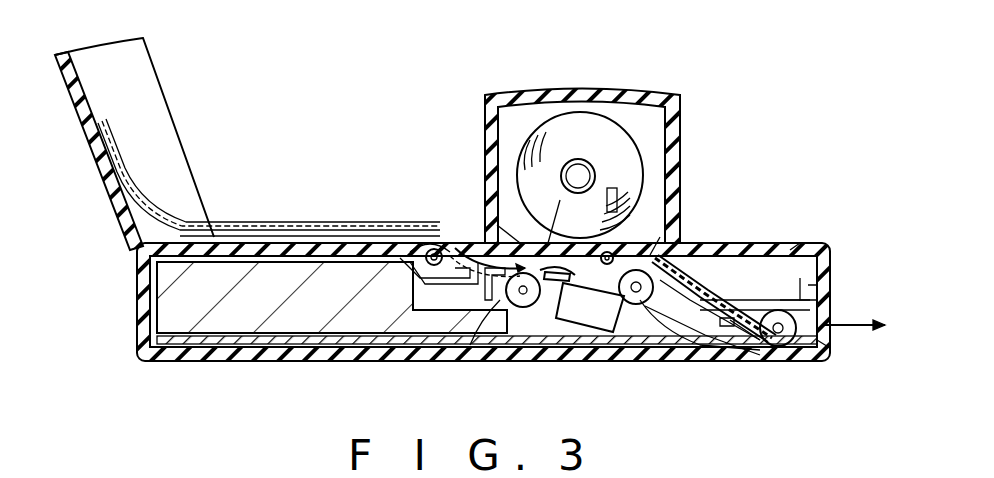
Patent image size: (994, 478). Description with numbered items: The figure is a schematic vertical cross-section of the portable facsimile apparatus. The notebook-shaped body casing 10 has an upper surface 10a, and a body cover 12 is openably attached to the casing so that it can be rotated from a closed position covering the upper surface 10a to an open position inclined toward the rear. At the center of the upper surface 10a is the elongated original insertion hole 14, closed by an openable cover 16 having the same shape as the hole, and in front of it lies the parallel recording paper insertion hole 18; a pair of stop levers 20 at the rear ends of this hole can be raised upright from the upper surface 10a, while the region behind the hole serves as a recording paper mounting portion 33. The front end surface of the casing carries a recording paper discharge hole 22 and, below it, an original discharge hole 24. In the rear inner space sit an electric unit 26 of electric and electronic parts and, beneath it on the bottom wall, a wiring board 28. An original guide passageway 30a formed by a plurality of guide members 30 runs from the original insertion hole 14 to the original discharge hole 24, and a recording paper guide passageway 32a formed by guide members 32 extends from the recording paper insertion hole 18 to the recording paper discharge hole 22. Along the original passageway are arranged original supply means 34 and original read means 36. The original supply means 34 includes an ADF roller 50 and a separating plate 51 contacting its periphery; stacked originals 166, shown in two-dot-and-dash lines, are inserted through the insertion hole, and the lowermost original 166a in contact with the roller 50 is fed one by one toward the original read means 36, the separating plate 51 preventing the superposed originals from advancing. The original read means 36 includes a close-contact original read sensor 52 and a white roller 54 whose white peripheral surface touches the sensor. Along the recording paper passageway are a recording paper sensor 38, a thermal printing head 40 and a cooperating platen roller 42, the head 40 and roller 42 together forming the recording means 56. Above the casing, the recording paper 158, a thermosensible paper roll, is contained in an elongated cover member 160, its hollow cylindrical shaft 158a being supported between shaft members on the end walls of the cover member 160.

The body casing 10 is at (138, 312).
The upper surface 10a is at (797, 243).
The body cover 12 is at (122, 222).
The original insertion hole 14 is at (447, 248).
The openable cover 16 is at (432, 248).
The recording paper insertion hole 18 is at (612, 257).
The stop lever 20 is at (662, 236).
The recording paper discharge hole 22 is at (826, 322).
The original discharge hole 24 is at (830, 352).
The electric unit 26 is at (190, 322).
The wiring board 28 is at (276, 344).
The guide member 30 is at (486, 320).
The original guide passageway 30a is at (735, 340).
The guide member 32 is at (706, 290).
The recording paper guide passageway 32a is at (700, 340).
The recording paper mounting portion 33 is at (510, 243).
The original supply means 34 is at (540, 268).
The original read means 36 is at (640, 306).
The recording paper sensor 38 is at (737, 318).
The thermal printing head 40 is at (817, 282).
The platen roller 42 is at (780, 347).
The ADF roller 50 is at (530, 308).
The separating plate 51 is at (527, 243).
The original read sensor 52 is at (553, 283).
The white roller 54 is at (590, 307).
The recording means 56 is at (786, 298).
The recording paper 158 is at (632, 126).
The hollow cylindrical shaft 158a is at (576, 160).
The cover member 160 is at (683, 128).
The originals 166 is at (262, 232).
The lowermost original 166a is at (320, 234).